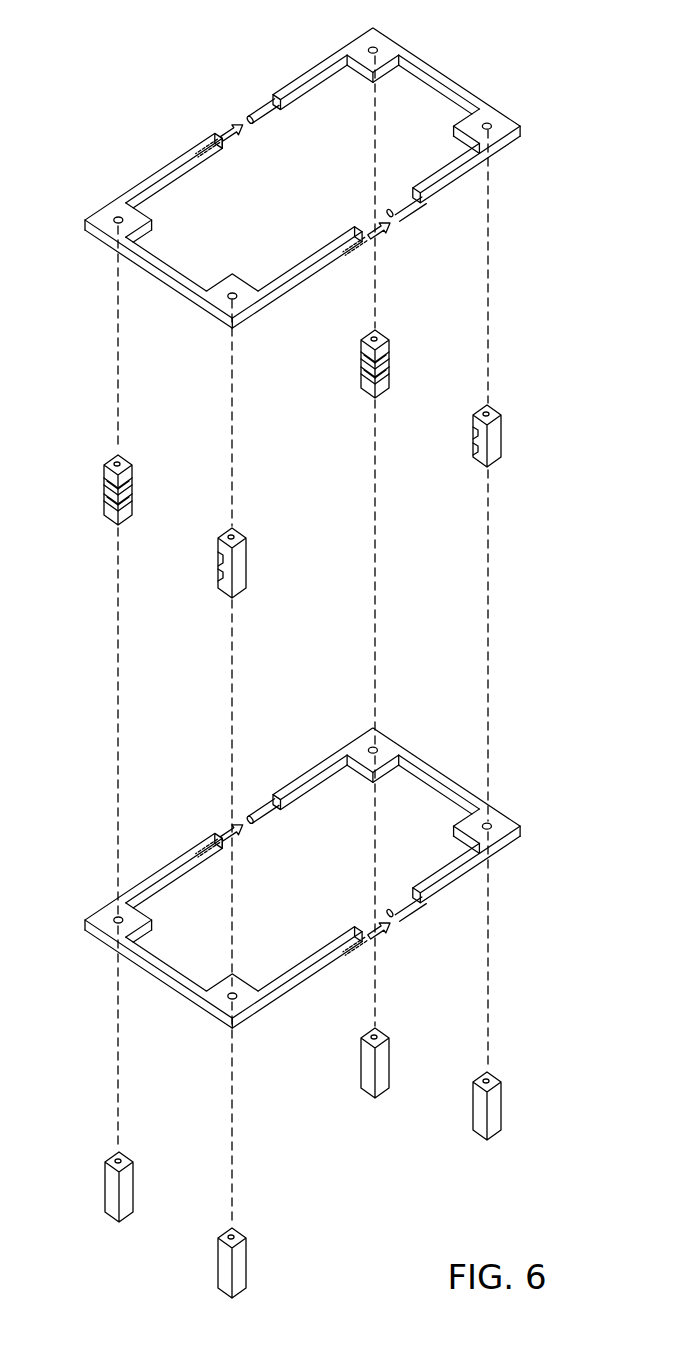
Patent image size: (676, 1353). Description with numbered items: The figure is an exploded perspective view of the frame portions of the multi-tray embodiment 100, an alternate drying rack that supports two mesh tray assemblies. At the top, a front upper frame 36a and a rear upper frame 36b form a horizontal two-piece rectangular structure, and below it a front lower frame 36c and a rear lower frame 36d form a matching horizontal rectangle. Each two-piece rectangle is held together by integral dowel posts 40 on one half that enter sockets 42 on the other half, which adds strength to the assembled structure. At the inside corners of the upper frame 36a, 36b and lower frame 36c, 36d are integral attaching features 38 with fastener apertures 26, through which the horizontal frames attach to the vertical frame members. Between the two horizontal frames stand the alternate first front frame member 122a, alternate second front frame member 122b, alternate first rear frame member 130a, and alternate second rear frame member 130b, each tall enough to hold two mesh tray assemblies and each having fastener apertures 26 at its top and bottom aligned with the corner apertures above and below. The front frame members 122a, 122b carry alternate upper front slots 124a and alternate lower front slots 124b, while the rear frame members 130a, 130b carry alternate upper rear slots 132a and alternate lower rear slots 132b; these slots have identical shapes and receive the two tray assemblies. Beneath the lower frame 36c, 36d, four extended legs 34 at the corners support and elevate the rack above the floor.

The multi-tray embodiment 100 is at (126, 37).
The fastener apertures 26 is at (378, 50).
The legs 34 is at (220, 1255).
The front upper frame 36a is at (158, 180).
The rear upper frame 36b is at (318, 64).
The front lower frame 36c is at (207, 925).
The rear lower frame 36d is at (410, 802).
The integral attaching features 38 is at (476, 113).
The dowel posts 40 is at (262, 104).
The sockets 42 is at (203, 140).
The alternate first front frame member 122a is at (106, 478).
The alternate second front frame member 122b is at (248, 572).
The alternate upper front slots 124a is at (218, 553).
The alternate lower front slots 124b is at (218, 570).
The alternate first rear frame member 130a is at (360, 365).
The alternate second rear frame member 130b is at (498, 442).
The alternate upper rear slots 132a is at (473, 425).
The alternate lower rear slots 132b is at (473, 438).